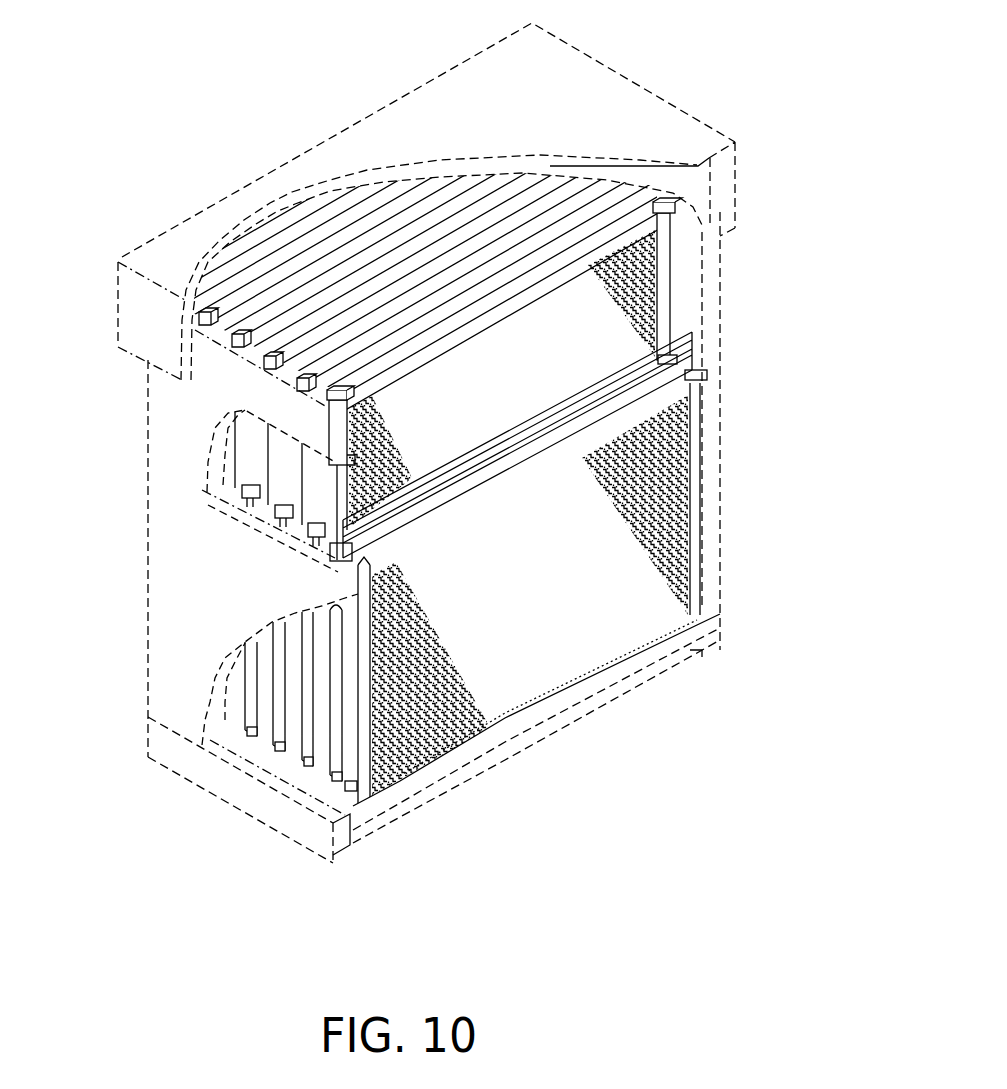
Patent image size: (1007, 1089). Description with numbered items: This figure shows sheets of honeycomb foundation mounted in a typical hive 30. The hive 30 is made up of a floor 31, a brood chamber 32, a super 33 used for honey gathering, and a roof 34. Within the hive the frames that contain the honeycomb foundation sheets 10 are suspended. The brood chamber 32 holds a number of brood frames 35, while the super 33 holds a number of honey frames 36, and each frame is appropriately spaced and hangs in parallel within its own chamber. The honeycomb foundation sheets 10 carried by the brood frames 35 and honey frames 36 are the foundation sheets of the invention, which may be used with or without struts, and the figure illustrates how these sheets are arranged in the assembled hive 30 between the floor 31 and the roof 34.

The honeycomb foundation sheet 10 is at (580, 322).
The hive 30 is at (243, 136).
The floor 31 is at (425, 785).
The brood chamber 32 is at (189, 646).
The super 33 is at (179, 418).
The roof 34 is at (435, 123).
The brood frame 35 is at (637, 402).
The honey frame 36 is at (607, 230).